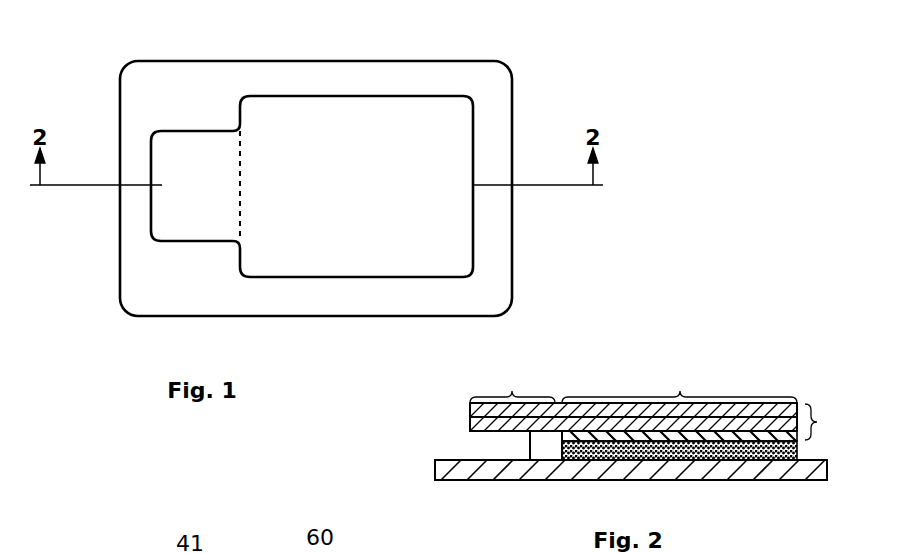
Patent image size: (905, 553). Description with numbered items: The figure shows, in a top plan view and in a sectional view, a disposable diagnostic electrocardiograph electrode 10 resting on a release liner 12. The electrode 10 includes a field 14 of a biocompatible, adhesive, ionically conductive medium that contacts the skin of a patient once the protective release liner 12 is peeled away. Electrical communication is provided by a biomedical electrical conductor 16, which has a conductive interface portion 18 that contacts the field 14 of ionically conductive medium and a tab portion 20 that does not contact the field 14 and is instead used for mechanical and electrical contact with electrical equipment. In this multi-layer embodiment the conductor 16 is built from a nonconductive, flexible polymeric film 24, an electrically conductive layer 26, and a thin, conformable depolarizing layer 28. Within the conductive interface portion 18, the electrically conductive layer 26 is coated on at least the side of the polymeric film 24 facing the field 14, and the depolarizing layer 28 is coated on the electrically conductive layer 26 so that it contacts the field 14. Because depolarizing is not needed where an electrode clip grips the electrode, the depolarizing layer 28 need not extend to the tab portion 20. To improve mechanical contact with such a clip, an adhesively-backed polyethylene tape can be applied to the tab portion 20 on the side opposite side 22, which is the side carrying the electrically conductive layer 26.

In FIG. 1, the electrode 10 is at (350, 190).
In FIG. 2, the electrode 10 is at (640, 406).
In FIG. 1, the release liner 12 is at (134, 113).
In FIG. 2, the release liner 12 is at (445, 465).
In FIG. 2, the field of ionically conductive medium 14 is at (797, 450).
In FIG. 1, the biomedical electrical conductor 16 is at (371, 190).
In FIG. 2, the biomedical electrical conductor 16 is at (622, 449).
In FIG. 1, the conductive interface portion 18 is at (416, 228).
In FIG. 2, the conductive interface portion 18 is at (679, 383).
In FIG. 1, the tab portion 20 is at (188, 157).
In FIG. 2, the tab portion 20 is at (512, 383).
In FIG. 2, the side 22 is at (530, 431).
In FIG. 1, the nonconductive flexible polymeric film 24 is at (452, 240).
In FIG. 2, the nonconductive flexible polymeric film 24 is at (490, 410).
In FIG. 2, the electrically conductive layer 26 is at (470, 427).
In FIG. 2, the depolarizing layer 28 is at (748, 462).